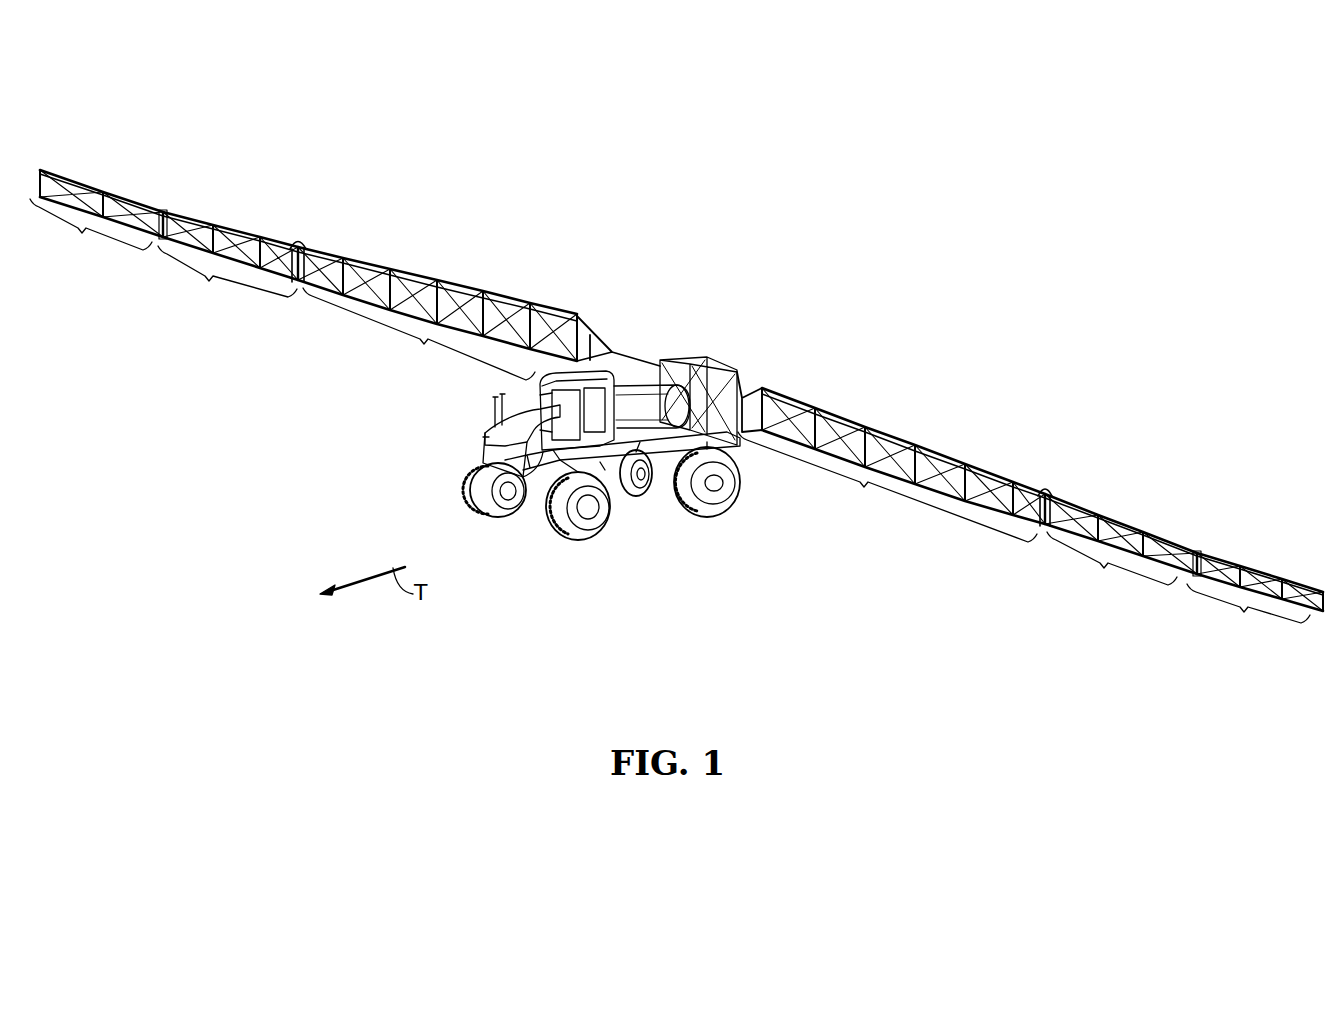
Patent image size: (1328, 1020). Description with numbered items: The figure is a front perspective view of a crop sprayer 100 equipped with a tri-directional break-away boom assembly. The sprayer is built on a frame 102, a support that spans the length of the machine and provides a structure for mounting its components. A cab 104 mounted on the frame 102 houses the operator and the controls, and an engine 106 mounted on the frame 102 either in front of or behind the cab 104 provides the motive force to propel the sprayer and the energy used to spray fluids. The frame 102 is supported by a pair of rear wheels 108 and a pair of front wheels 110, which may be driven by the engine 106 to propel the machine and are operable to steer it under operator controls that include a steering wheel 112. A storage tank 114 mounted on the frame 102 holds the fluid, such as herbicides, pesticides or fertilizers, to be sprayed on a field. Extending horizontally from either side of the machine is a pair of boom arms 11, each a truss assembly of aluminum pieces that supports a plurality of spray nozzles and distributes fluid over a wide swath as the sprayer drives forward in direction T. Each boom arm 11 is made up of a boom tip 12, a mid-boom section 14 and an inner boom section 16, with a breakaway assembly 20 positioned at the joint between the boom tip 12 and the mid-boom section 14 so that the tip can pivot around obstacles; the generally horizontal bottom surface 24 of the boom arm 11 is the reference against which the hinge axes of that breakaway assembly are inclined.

The boom arm 11 is at (676, 398).
The boom tip 12 is at (676, 406).
The mid-boom section 14 is at (677, 406).
The inner boom section 16 is at (671, 394).
The breakaway assembly 20 is at (166, 212).
The bottom surface 24 is at (337, 249).
The crop sprayer 100 is at (581, 414).
The frame 102 is at (632, 500).
The cab 104 is at (545, 390).
The engine 106 is at (538, 487).
The rear wheels 108 is at (653, 487).
The front wheels 110 is at (486, 507).
The steering wheel 112 is at (505, 410).
The storage tank 114 is at (658, 358).